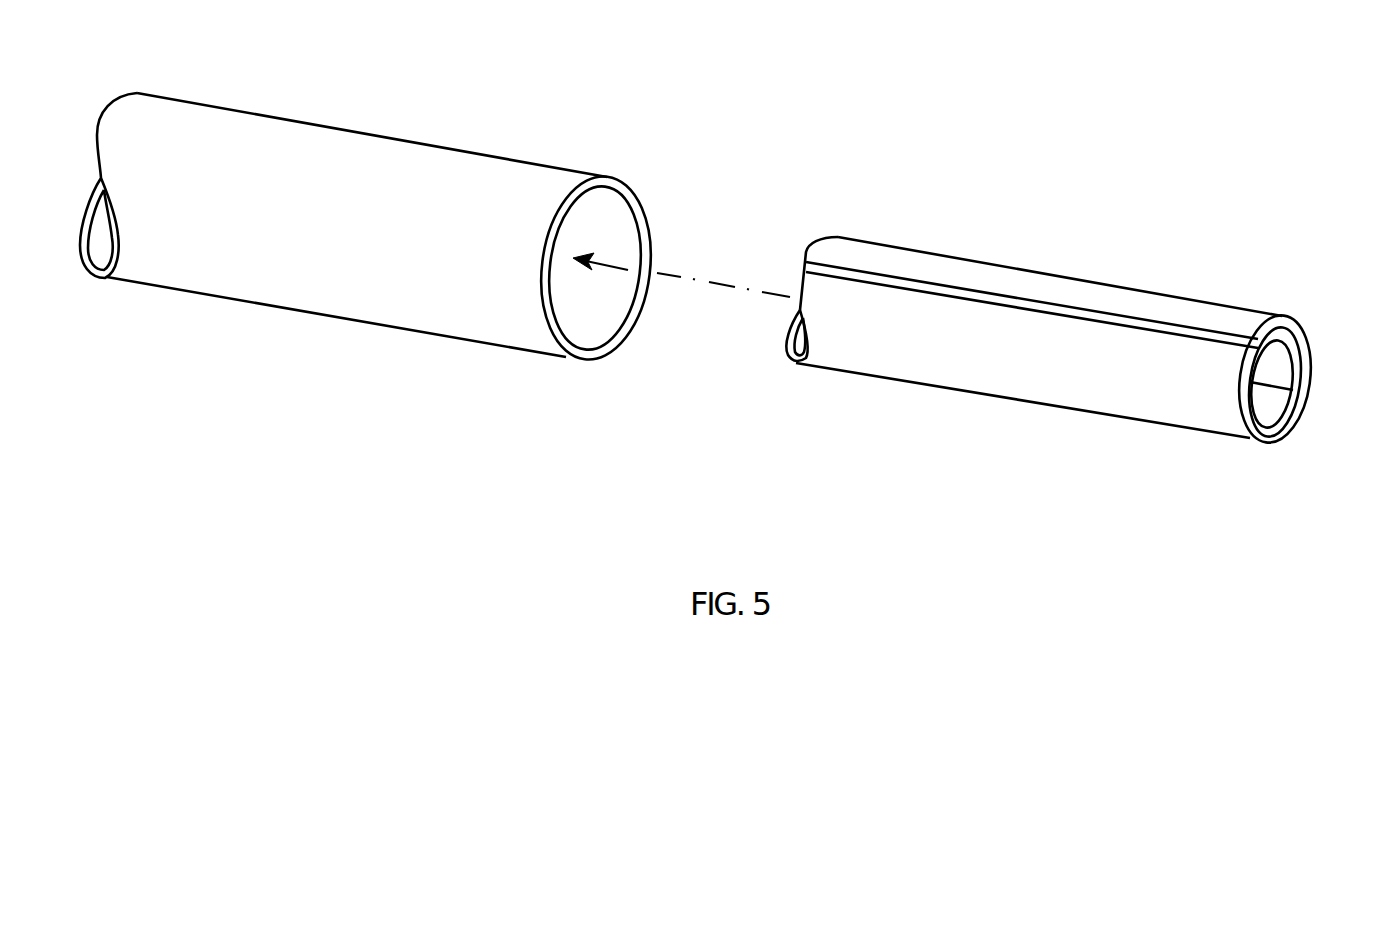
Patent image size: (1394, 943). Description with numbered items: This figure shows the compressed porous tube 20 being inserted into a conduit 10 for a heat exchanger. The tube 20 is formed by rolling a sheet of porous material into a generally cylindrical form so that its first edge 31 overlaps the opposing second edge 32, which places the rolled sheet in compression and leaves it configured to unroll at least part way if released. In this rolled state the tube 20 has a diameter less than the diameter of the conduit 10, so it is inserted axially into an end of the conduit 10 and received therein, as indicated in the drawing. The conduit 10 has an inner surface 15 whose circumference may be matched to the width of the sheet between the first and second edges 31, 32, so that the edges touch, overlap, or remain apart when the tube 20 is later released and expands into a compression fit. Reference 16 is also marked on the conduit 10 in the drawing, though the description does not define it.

The conduit 10 is at (442, 103).
The inner surface 15 is at (620, 232).
The housing body wall 16 is at (477, 180).
The tube 20 is at (1112, 247).
The first edge 31 is at (1015, 298).
The second edge 32 is at (1297, 393).